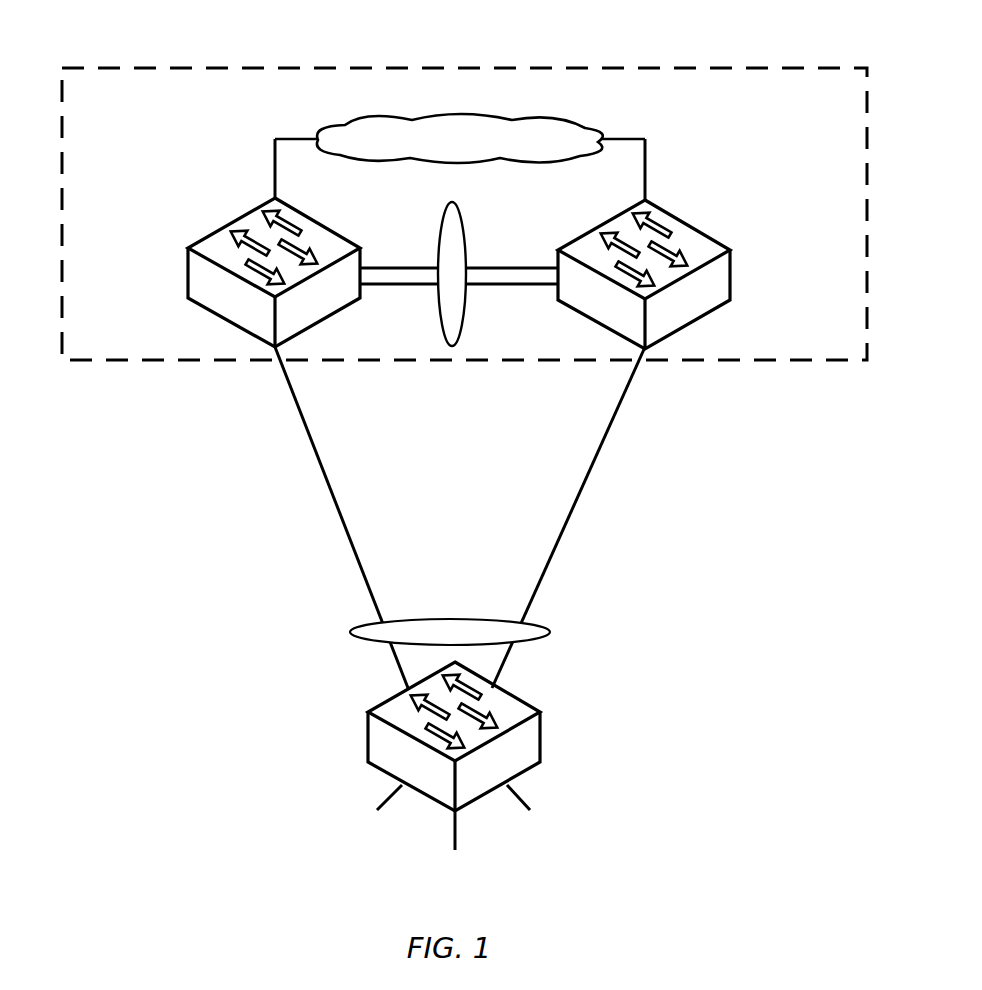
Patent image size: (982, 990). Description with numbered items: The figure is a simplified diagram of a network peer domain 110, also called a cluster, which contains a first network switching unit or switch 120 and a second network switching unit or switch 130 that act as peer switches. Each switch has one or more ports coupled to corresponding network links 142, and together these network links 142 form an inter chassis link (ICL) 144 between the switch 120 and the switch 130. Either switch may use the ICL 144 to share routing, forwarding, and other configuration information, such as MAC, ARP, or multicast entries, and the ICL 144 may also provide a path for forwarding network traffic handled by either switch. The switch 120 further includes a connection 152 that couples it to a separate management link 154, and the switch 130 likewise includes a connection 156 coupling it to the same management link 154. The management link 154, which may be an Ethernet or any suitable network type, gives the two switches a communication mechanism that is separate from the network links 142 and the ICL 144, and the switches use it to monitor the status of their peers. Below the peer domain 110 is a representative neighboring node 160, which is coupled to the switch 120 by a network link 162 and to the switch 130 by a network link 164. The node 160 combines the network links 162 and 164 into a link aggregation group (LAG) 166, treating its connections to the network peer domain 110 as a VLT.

The network peer domain 110 is at (683, 66).
The first network switching unit 120 is at (215, 272).
The second network switching unit 130 is at (704, 274).
The network links 142 is at (377, 287).
The inter chassis link (ICL) 144 is at (465, 232).
The connection 152 is at (271, 199).
The management link 154 is at (500, 119).
The connection 156 is at (647, 200).
The node 160 is at (512, 756).
The network link 162 is at (332, 500).
The network link 164 is at (570, 515).
The link aggregation group (LAG) 166 is at (450, 632).